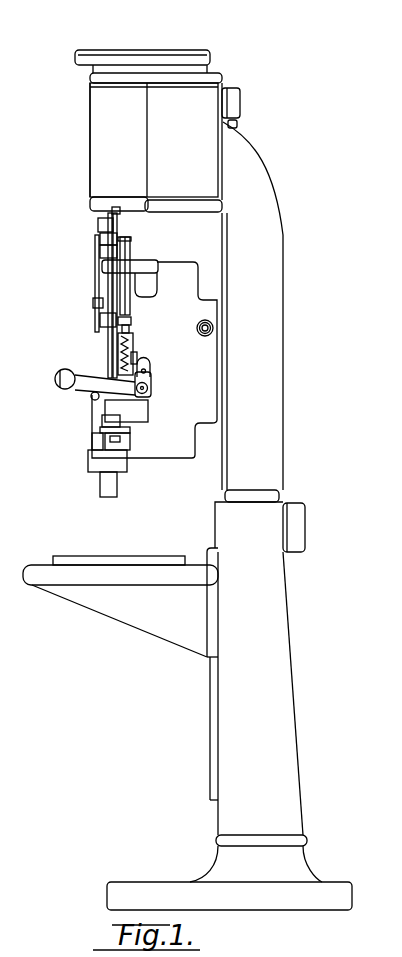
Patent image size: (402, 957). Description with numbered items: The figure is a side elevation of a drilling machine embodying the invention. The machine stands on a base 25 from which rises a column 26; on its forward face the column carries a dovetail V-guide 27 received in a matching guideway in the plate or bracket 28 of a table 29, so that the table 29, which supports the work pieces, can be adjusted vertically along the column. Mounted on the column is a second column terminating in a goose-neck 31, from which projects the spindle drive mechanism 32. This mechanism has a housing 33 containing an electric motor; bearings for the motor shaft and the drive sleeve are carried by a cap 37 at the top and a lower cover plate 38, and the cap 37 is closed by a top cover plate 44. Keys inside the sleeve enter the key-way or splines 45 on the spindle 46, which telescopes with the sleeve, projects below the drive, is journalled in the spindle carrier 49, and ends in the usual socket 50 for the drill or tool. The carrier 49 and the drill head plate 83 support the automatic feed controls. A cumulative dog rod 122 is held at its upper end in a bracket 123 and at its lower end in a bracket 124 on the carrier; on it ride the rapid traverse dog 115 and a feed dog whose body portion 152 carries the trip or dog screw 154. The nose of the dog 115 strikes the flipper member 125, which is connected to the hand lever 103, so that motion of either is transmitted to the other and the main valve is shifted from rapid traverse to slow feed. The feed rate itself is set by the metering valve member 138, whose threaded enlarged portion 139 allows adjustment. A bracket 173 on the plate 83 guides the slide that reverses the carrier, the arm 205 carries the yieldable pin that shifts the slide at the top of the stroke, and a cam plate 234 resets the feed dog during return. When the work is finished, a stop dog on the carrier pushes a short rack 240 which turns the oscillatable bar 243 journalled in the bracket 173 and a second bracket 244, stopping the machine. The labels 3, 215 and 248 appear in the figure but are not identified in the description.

The column 3 is at (263, 353).
The base 25 is at (120, 890).
The column 26 is at (268, 662).
The dovetail V-guide 27 is at (213, 710).
The plate or bracket 28 is at (210, 630).
The table 29 is at (85, 573).
The goose-neck 31 is at (252, 178).
The spindle drive mechanism 32 is at (102, 158).
The housing 33 is at (92, 115).
The cap 37 is at (98, 66).
The lower cover plate 38 is at (98, 207).
The top cover plate 44 is at (97, 52).
The key-way or splines 45 is at (118, 212).
The spindle 46 is at (102, 222).
The spindle carrier 49 is at (103, 417).
The socket 50 is at (92, 475).
The plate 83 is at (197, 255).
The lever 103 is at (55, 382).
The rapid traverse dog 115 is at (134, 358).
The cumulative dog rod 122 is at (107, 249).
The bracket 123 is at (107, 237).
The bracket 124 is at (102, 438).
The flipper member 125 is at (152, 370).
The metering valve member 138 is at (197, 326).
The enlarged portion 139 is at (100, 301).
The body portion 152 is at (130, 341).
The trip or dog screw 154 is at (128, 326).
The bracket 173 is at (142, 408).
The arm 205 is at (120, 440).
The gasket 215 is at (102, 428).
The cam plate 234 is at (124, 316).
The short rack 240 is at (91, 397).
The oscillatable bar 243 is at (107, 287).
The second bracket 244 is at (132, 262).
The clamp block 248 is at (103, 320).